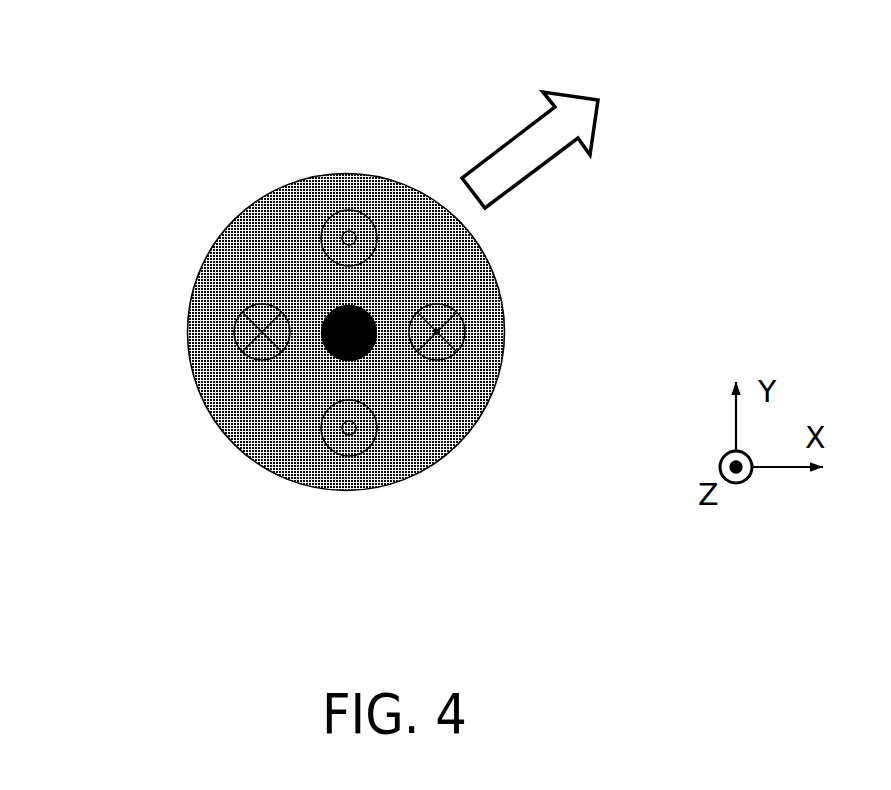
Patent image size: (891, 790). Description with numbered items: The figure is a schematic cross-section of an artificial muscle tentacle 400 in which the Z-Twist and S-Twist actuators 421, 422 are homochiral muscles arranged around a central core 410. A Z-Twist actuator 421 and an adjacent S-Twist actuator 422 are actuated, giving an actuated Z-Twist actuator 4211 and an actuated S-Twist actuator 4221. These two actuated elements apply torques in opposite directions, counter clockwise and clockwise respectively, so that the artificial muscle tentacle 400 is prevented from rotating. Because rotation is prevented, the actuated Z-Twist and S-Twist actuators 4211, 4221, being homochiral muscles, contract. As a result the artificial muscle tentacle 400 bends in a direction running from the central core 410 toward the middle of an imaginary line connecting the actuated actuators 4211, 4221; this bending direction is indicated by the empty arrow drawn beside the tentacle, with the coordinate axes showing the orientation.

The artificial muscle tentacle 400 is at (762, 102).
The central core 410 is at (325, 313).
The Z-Twist actuator 421 is at (372, 445).
The actuated Z-Twist actuator 4211 is at (343, 208).
The S-Twist actuator 422 is at (235, 322).
The actuated S-Twist actuator 4221 is at (462, 355).